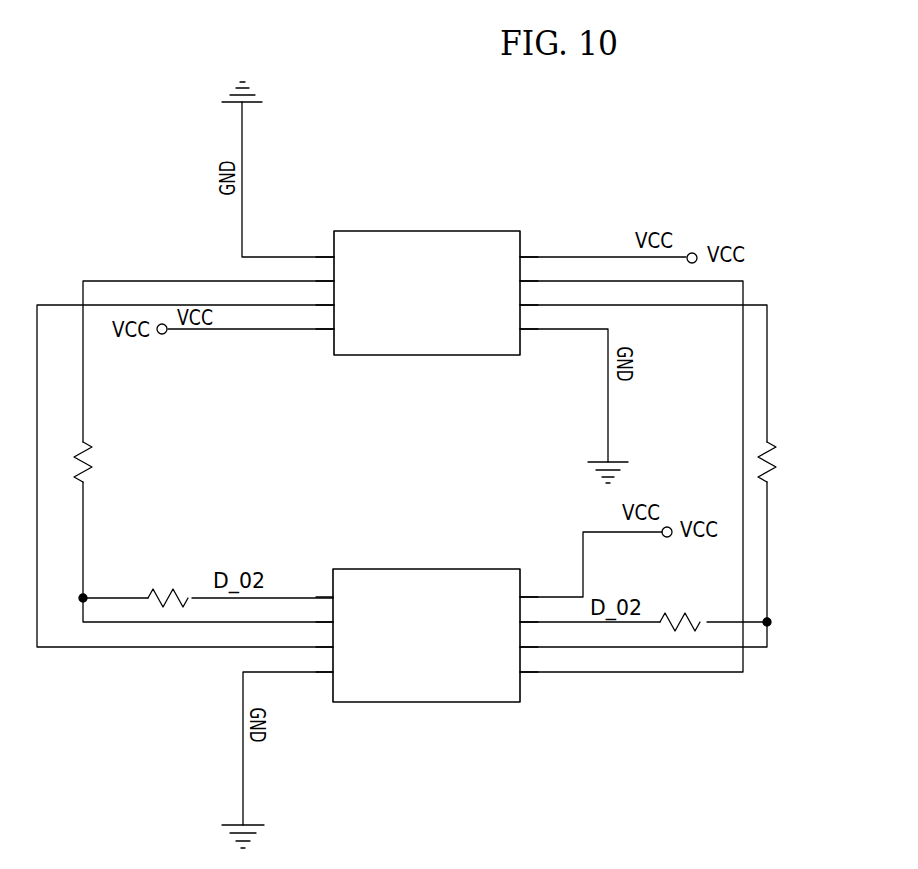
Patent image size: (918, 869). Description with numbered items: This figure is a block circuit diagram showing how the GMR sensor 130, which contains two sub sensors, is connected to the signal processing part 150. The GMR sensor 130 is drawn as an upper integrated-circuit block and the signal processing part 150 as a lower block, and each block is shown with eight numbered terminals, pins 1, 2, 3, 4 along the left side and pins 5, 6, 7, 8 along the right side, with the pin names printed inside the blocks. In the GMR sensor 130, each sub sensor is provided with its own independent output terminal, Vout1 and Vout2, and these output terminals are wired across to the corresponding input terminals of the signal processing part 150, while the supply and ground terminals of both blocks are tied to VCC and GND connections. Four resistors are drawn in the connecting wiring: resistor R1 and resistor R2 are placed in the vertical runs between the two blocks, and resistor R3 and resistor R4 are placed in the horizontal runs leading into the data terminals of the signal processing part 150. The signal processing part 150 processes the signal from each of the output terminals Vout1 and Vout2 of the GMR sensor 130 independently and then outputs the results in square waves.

The GMR sensor 130 is at (427, 231).
The signal processing part 150 is at (490, 702).
The resistor R1 (1K) R1 is at (99, 462).
The resistor R2 (1K) R2 is at (786, 459).
The resistor R3 (100K) R3 is at (684, 624).
The resistor R4 (100K) R4 is at (171, 599).
The pin 1 is at (320, 416).
The pin 2 is at (320, 440).
The pin 3 is at (320, 465).
The pin 4 is at (320, 489).
The pin 5 is at (535, 489).
The pin 6 is at (535, 465).
The pin 7 is at (535, 440).
The pin 8 is at (535, 416).